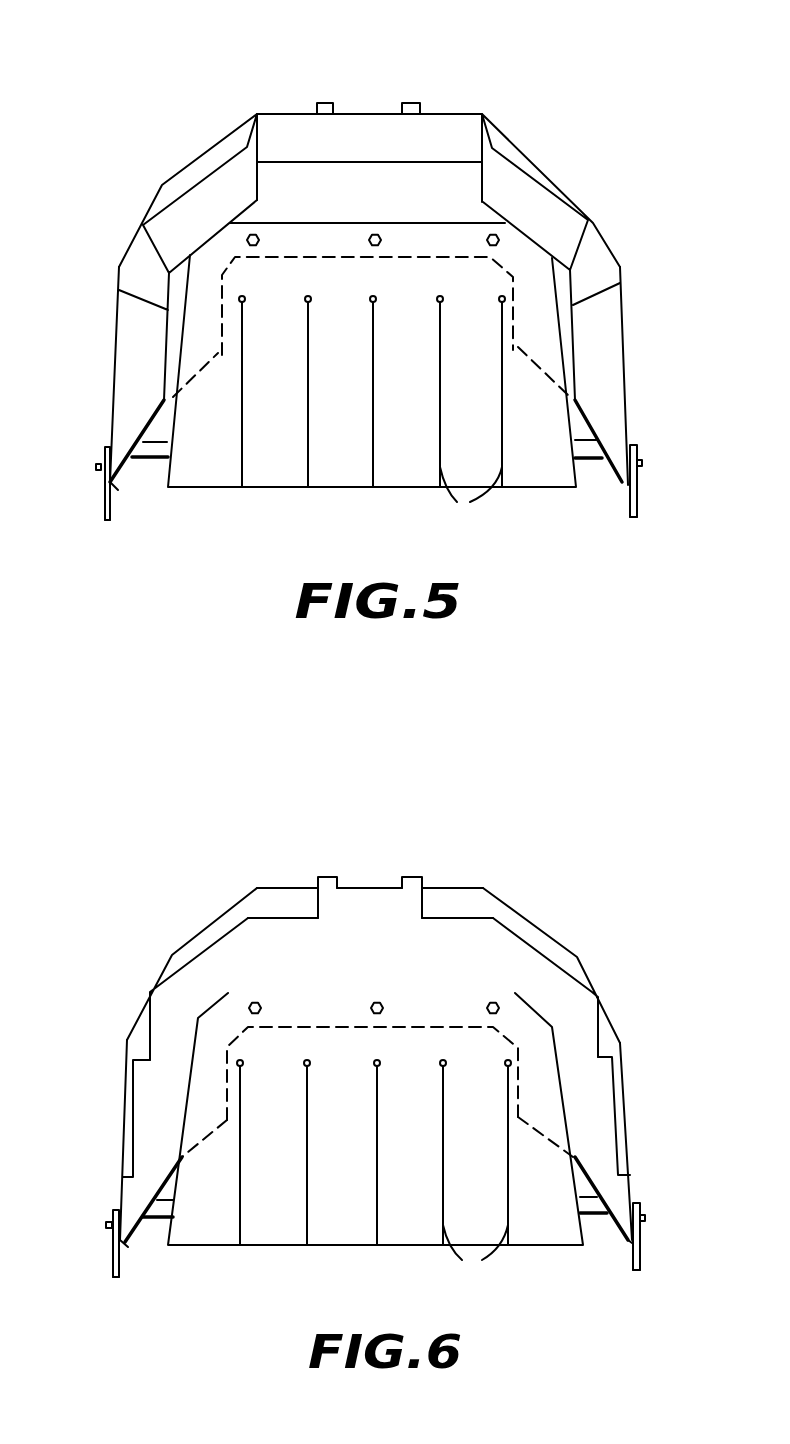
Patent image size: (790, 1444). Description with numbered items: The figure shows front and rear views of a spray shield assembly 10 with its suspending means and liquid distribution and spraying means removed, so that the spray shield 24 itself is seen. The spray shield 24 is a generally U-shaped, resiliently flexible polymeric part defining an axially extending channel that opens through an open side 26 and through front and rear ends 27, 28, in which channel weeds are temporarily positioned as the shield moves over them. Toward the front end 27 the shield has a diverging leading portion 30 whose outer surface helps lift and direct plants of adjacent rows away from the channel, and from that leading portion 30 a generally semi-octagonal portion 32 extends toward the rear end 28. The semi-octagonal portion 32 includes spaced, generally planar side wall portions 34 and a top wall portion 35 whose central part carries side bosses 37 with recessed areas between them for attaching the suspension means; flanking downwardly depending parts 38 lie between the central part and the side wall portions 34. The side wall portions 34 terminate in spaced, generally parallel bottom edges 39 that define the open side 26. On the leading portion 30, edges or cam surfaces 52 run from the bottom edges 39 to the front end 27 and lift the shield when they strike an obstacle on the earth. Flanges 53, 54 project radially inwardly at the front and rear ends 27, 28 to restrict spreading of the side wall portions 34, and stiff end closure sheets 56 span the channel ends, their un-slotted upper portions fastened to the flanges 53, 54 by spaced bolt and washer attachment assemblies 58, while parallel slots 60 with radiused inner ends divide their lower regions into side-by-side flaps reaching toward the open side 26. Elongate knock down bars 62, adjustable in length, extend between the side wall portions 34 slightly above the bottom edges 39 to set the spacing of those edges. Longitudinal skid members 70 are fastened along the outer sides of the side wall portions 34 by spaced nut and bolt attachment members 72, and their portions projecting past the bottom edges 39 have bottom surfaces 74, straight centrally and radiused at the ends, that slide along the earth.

In FIG. 5, the spray shield assembly 10 is at (608, 150).
In FIG. 6, the spray shield assembly 10 is at (586, 928).
In FIG. 5, the spray shield 24 is at (636, 338).
In FIG. 6, the spray shield 24 is at (632, 1038).
In FIG. 5, the open side 26 is at (118, 490).
In FIG. 6, the open side 26 is at (128, 1247).
In FIG. 5, the front end 27 is at (435, 180).
In FIG. 6, the rear end 28 is at (467, 942).
In FIG. 5, the leading portion 30 is at (600, 270).
In FIG. 6, the semi-octagonal portion 32 is at (588, 980).
In FIG. 5, the side wall portions 34 is at (115, 372).
In FIG. 6, the side wall portions 34 is at (125, 1107).
In FIG. 5, the top wall portion 35 is at (368, 115).
In FIG. 6, the top wall portion 35 is at (370, 888).
In FIG. 5, the side bosses 37 is at (412, 103).
In FIG. 6, the side bosses 37 is at (323, 877).
In FIG. 5, the downwardly depending parts 38 is at (190, 160).
In FIG. 6, the downwardly depending parts 38 is at (205, 928).
In FIG. 6, the bottom edges 39 is at (625, 1240).
In FIG. 5, the cam surfaces 52 is at (120, 482).
In FIG. 6, the cam surfaces 52 is at (376, 1199).
In FIG. 5, the front flange 53 is at (276, 177).
In FIG. 6, the rear flange 54 is at (252, 937).
In FIG. 5, the end closure sheets 56 is at (393, 473).
In FIG. 6, the end closure sheets 56 is at (338, 1233).
In FIG. 5, the bolt and washer attachment assemblies 58 is at (370, 236).
In FIG. 6, the bolt and washer attachment assemblies 58 is at (367, 1007).
In FIG. 5, the slots 60 is at (471, 501).
In FIG. 6, the slots 60 is at (475, 1260).
In FIG. 5, the knock down bars 62 is at (160, 438).
In FIG. 6, the knock down bars 62 is at (167, 1195).
In FIG. 5, the skid members 70 is at (105, 502).
In FIG. 6, the skid members 70 is at (112, 1262).
In FIG. 5, the nut and bolt attachment members 72 is at (96, 467).
In FIG. 6, the nut and bolt attachment members 72 is at (106, 1224).
In FIG. 5, the bottom surfaces 74 is at (102, 520).
In FIG. 6, the bottom surfaces 74 is at (115, 1278).